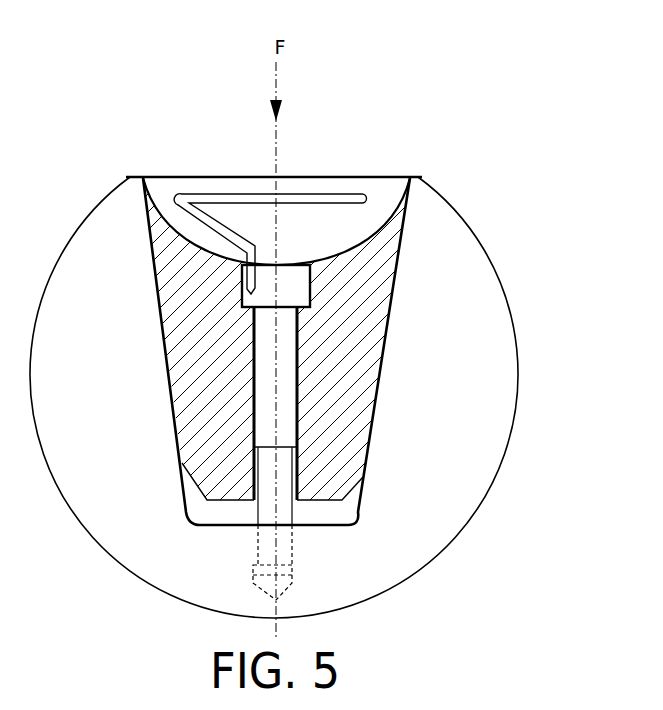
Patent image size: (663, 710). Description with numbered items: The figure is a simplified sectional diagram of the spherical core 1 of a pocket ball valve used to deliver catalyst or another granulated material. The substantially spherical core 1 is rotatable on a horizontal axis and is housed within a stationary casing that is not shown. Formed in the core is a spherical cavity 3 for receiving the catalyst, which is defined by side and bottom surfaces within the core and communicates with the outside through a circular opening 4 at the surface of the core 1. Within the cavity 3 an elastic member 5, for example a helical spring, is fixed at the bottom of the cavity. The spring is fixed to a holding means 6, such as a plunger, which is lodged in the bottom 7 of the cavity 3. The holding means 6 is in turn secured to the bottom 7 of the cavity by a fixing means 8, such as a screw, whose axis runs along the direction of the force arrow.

The spherical core 1 is at (490, 312).
The cavity 3 is at (385, 189).
The circular opening 4 is at (315, 183).
The elastic member 5 is at (247, 192).
The holding means 6 is at (372, 297).
The bottom 7 is at (343, 513).
The fixing means 8 is at (283, 418).